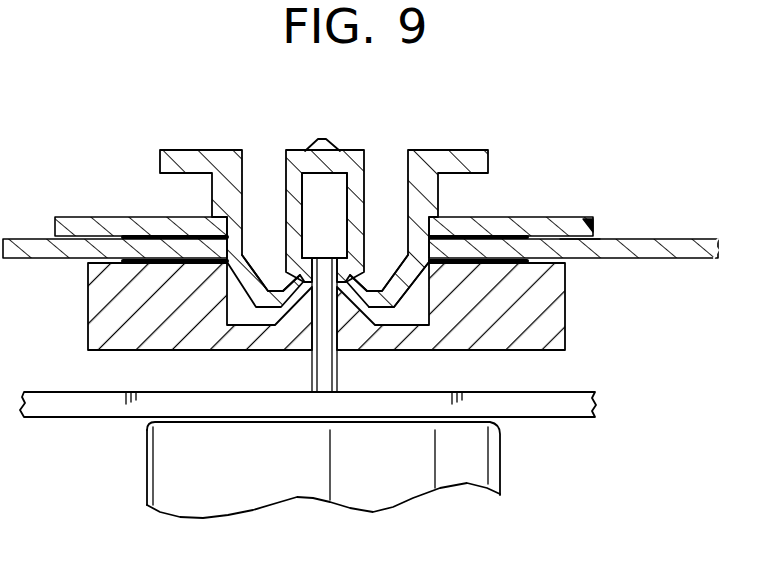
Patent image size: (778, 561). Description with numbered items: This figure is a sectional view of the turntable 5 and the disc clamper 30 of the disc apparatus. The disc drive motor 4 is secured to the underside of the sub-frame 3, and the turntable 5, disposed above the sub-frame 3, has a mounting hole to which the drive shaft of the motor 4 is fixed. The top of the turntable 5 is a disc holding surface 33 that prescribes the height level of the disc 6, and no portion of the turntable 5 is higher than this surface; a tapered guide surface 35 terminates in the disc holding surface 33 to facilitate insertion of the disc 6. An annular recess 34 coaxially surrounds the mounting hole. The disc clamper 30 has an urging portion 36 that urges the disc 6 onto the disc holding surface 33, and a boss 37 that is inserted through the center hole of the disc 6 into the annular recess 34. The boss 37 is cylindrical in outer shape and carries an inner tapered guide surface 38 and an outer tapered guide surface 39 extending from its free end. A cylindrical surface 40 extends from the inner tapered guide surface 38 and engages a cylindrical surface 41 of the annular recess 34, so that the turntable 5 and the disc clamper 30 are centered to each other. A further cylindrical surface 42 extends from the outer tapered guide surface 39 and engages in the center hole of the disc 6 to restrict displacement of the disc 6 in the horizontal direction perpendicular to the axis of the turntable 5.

The sub-frame 3 is at (83, 418).
The disc drive motor 4 is at (507, 460).
The turntable 5 is at (565, 333).
The disc 6 is at (693, 262).
The disc clamper 30 is at (480, 147).
The disc holding surface 33 is at (533, 265).
The annular recess 34 is at (242, 312).
The tapered guide surface 35 is at (560, 266).
The urging portion 36 is at (585, 246).
The boss 37 is at (385, 300).
The inner tapered guide surface 38 is at (350, 280).
The outer tapered guide surface 39 is at (428, 298).
The cylindrical surface 40 is at (305, 213).
The cylindrical surface 41 is at (357, 263).
The cylindrical surface 42 is at (440, 250).